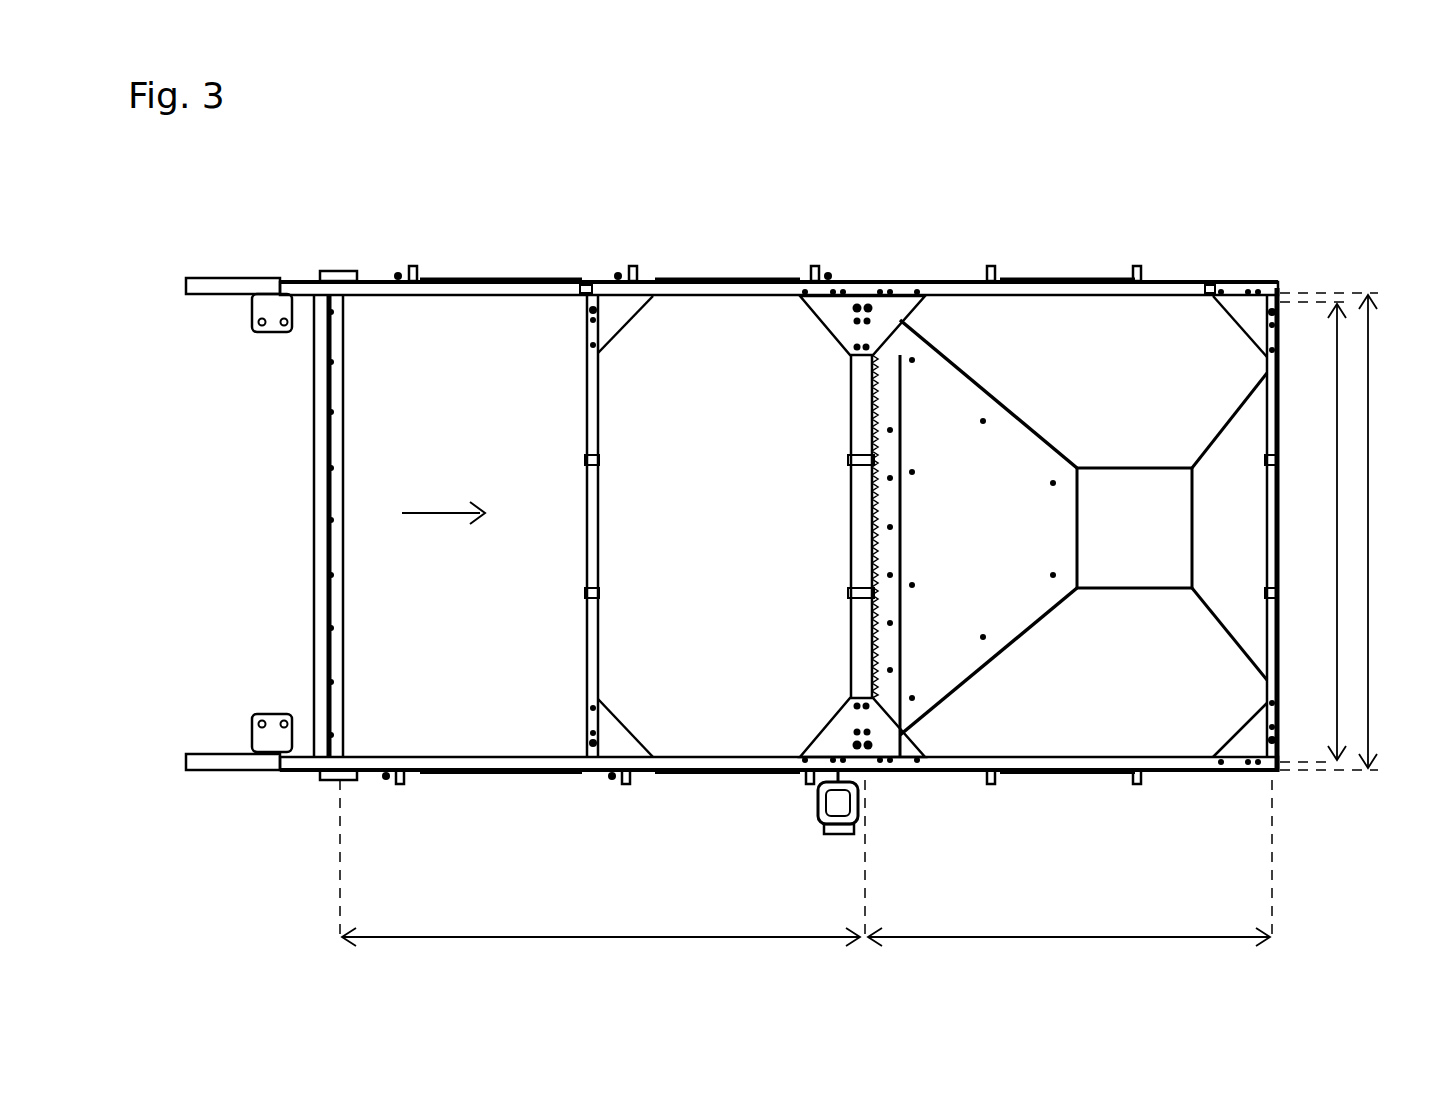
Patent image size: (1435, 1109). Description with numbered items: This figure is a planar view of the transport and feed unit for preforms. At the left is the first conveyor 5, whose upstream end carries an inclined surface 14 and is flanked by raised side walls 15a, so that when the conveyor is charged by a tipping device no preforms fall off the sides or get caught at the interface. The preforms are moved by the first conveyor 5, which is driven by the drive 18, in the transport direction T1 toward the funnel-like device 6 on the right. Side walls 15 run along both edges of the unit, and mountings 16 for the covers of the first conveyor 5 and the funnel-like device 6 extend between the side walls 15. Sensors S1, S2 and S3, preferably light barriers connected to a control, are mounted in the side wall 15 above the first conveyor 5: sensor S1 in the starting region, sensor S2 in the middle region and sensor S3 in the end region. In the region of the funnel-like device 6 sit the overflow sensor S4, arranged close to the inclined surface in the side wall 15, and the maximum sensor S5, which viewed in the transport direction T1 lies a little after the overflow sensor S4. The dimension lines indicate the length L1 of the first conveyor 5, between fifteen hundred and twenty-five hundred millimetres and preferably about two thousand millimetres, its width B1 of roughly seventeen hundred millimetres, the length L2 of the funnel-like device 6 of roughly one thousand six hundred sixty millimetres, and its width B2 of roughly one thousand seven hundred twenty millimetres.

The first conveyor 5 is at (356, 575).
The funnel-like device 6 is at (1082, 728).
The inclined surface 14 is at (330, 597).
The side walls 15 is at (528, 280).
The raised side walls 15a is at (278, 278).
The mountings 16 is at (600, 765).
The drive 18 is at (836, 832).
The sensor S1 is at (418, 266).
The sensor S2 is at (633, 266).
The sensor S3 is at (806, 784).
The overflow sensor S4 is at (991, 266).
The maximum sensor S5 is at (1137, 266).
The transport direction T1 is at (443, 497).
The length of the first conveyor belt L1 is at (602, 881).
The length of the funnel-like device L2 is at (1070, 881).
The width of the first conveyor belt B1 is at (1313, 532).
The width of the funnel-like device B2 is at (1345, 531).